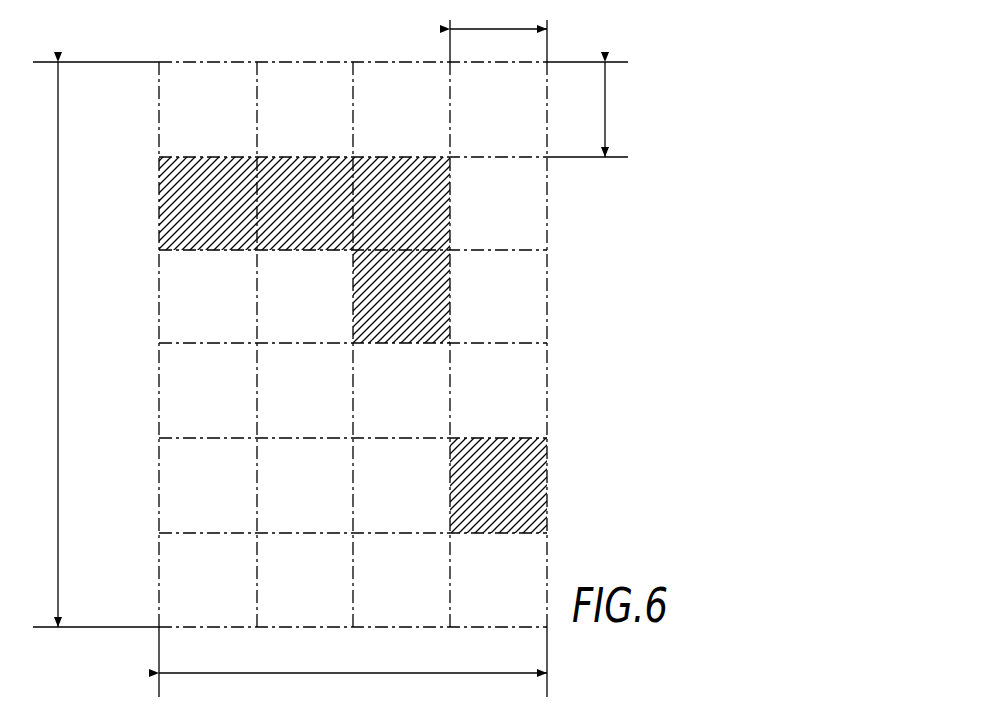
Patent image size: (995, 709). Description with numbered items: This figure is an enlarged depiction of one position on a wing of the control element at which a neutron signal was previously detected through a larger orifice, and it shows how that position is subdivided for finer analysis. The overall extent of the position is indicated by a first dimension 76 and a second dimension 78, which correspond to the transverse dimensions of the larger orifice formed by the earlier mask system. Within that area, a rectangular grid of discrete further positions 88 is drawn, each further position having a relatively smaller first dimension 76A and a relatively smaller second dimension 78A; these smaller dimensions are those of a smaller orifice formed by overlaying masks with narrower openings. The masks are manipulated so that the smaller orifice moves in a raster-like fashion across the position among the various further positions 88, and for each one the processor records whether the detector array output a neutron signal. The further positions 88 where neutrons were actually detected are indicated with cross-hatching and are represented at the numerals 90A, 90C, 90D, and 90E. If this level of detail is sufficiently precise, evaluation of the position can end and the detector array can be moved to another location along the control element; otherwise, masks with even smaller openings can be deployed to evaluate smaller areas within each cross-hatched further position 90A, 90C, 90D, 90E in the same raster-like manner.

The first dimension 76 is at (372, 673).
The second dimension 78 is at (57, 330).
The first dimension 76A is at (505, 28).
The second dimension 78A is at (607, 110).
The further positions 88 is at (225, 78).
The further position where neutrons were detected 90A is at (215, 157).
The further position where neutrons were detected 90C is at (283, 157).
The further position where neutrons were detected 90D is at (440, 295).
The further position where neutrons were detected 90E is at (497, 445).